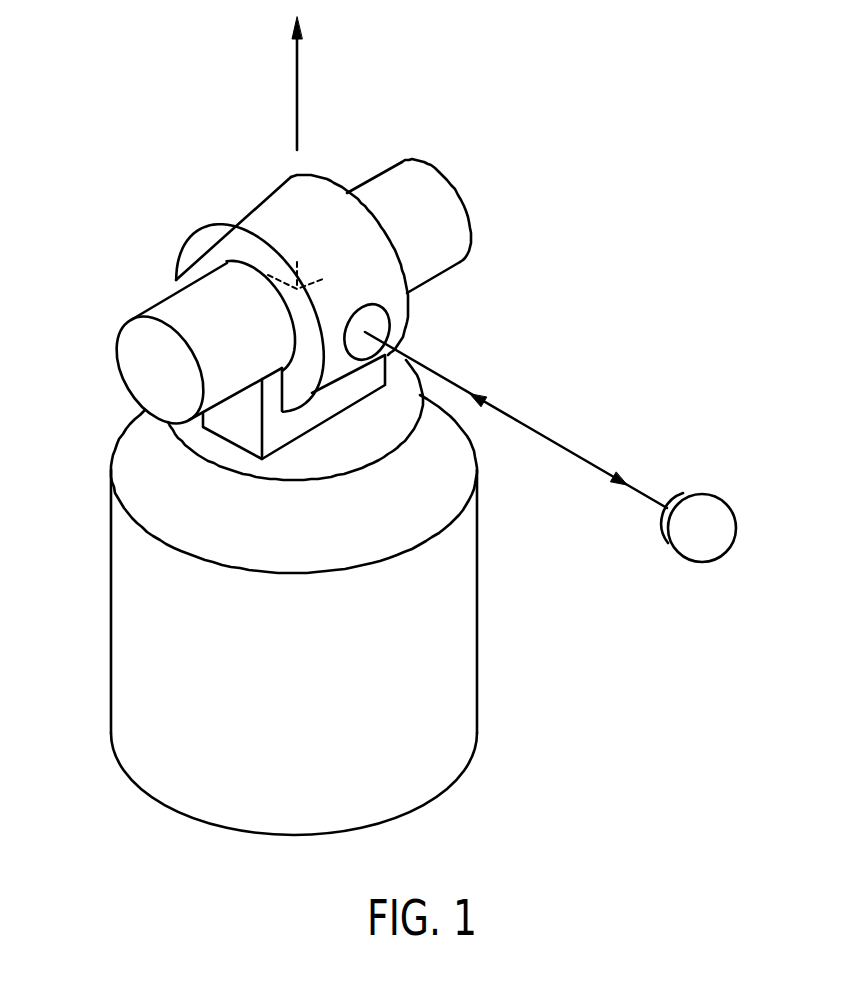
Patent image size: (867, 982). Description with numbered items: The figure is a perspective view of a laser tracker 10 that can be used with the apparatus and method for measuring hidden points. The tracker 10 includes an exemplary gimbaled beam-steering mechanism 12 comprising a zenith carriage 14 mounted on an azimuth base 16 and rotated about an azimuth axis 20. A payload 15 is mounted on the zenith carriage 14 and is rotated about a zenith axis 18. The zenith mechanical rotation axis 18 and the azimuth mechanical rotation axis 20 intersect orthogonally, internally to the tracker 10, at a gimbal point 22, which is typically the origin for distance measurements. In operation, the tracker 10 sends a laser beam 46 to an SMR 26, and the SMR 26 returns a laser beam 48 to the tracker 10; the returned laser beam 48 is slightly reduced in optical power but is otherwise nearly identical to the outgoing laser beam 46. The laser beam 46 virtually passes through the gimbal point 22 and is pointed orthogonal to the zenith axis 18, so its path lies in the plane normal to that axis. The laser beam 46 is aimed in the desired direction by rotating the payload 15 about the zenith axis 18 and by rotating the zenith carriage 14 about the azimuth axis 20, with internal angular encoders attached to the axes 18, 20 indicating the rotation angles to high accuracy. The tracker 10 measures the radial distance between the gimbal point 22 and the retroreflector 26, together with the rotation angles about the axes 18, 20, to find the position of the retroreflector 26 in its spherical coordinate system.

The laser tracker 10 is at (131, 183).
The gimbaled beam-steering mechanism 12 is at (545, 283).
The zenith carriage 14 is at (133, 367).
The payload 15 is at (400, 307).
The azimuth base 16 is at (127, 568).
The zenith axis 18 is at (567, 140).
The azimuth axis 20 is at (295, 86).
The gimbal point 22 is at (296, 288).
The SMR 26 is at (705, 508).
The laser beam 46 is at (602, 468).
The laser beam 48 is at (495, 407).